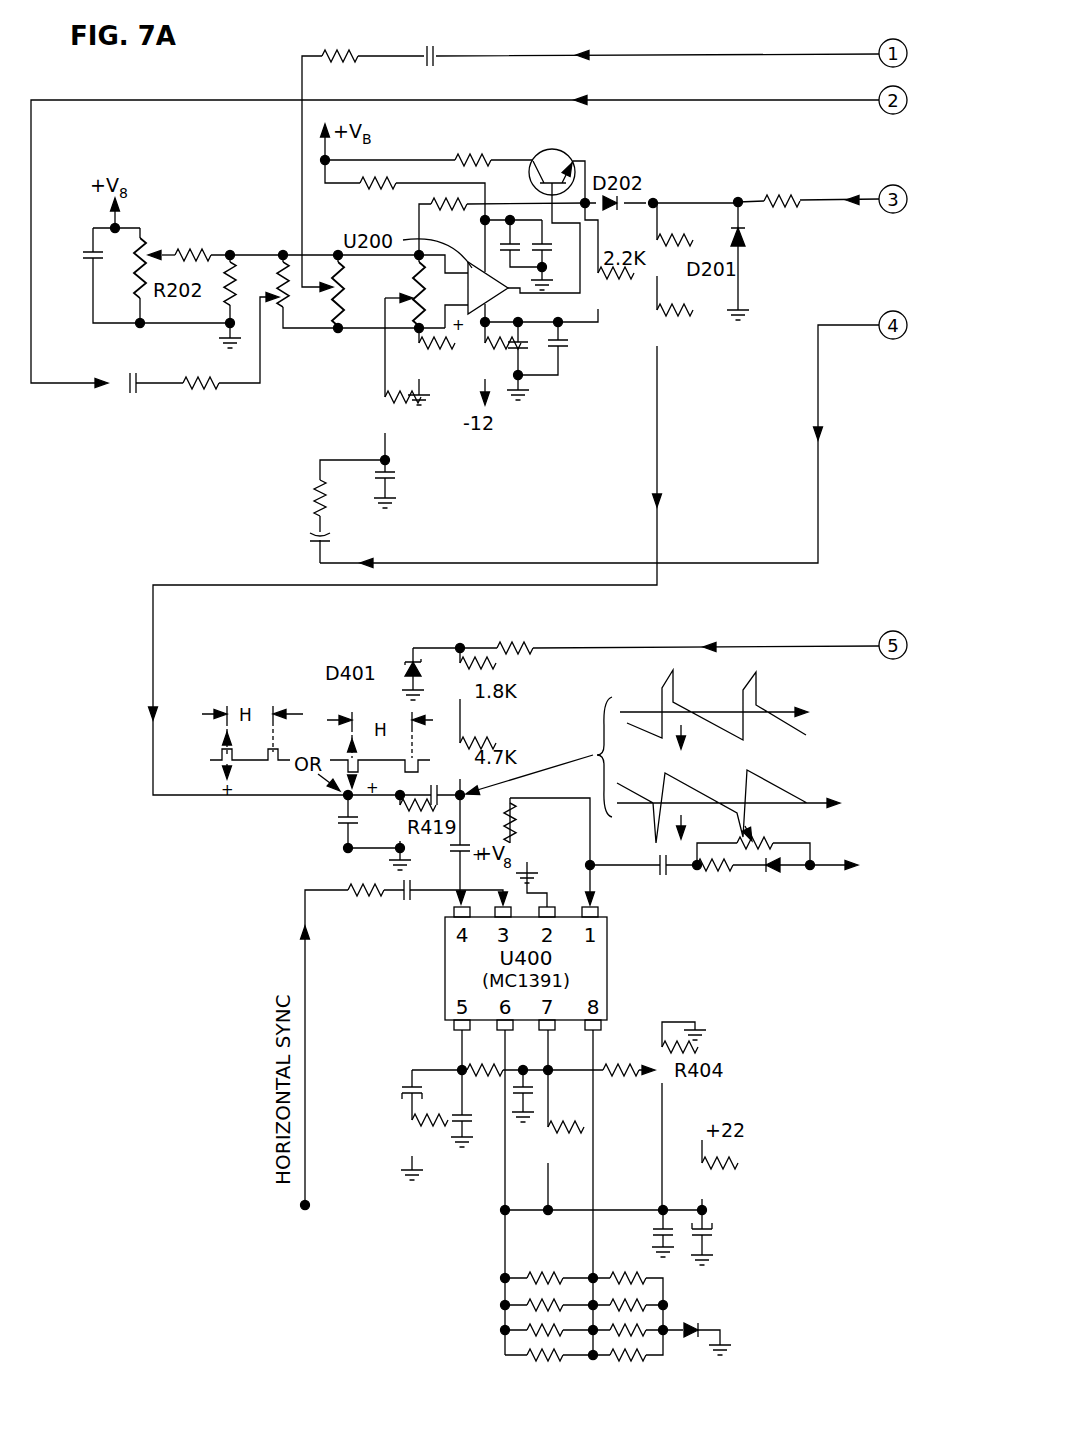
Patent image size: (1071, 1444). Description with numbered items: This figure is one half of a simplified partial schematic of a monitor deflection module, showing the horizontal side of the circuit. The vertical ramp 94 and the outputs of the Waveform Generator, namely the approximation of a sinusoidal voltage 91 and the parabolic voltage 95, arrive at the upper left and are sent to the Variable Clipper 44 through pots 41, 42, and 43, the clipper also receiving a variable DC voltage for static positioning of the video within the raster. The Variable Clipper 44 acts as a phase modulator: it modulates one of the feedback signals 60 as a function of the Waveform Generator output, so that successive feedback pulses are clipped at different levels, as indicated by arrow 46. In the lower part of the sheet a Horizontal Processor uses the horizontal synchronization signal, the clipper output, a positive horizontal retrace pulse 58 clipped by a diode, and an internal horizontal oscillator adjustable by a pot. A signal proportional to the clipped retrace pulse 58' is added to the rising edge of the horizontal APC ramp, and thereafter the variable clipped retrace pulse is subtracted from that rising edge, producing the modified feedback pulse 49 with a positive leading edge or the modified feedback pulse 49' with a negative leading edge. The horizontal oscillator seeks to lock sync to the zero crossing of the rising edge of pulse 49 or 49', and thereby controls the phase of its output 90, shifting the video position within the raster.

The pot 41 is at (278, 305).
The pot 42 is at (404, 283).
The pot 43 is at (328, 300).
The Variable Clipper 44 is at (208, 458).
The clipper pulse 46 is at (656, 428).
The modified feedback pulse 49 is at (652, 770).
The modified feedback pulse 49' is at (726, 710).
The horizontal retrace pulse 58 is at (669, 634).
The clipped retrace pulse 58' is at (435, 628).
The feedback signal 60 is at (812, 199).
The output 90 is at (742, 851).
The sinusoidal voltage 91 is at (655, 62).
The vertical ramp 94 is at (668, 108).
The parabolic voltage 95 is at (848, 300).